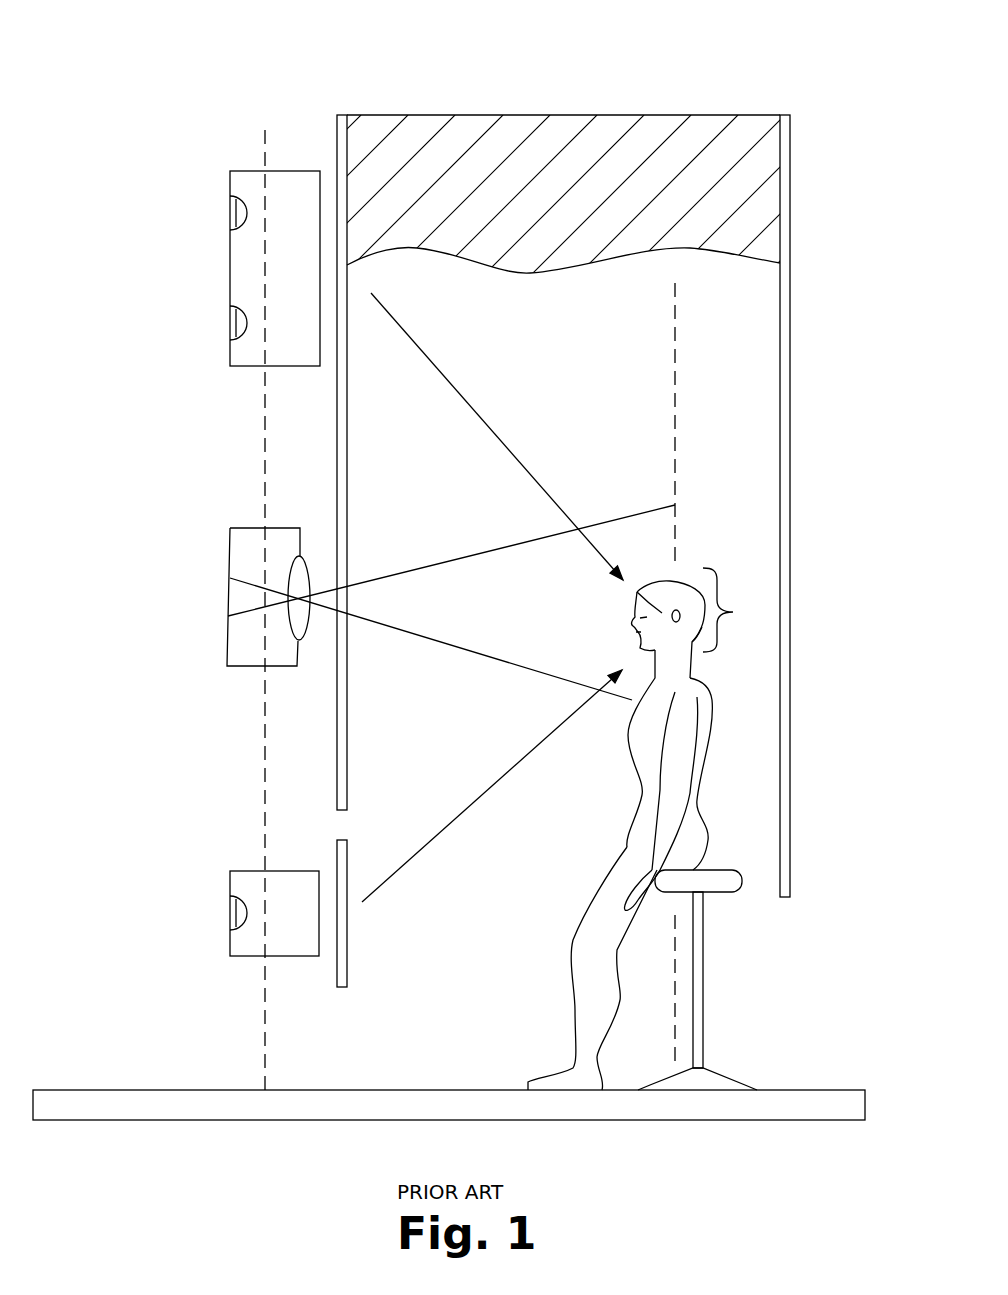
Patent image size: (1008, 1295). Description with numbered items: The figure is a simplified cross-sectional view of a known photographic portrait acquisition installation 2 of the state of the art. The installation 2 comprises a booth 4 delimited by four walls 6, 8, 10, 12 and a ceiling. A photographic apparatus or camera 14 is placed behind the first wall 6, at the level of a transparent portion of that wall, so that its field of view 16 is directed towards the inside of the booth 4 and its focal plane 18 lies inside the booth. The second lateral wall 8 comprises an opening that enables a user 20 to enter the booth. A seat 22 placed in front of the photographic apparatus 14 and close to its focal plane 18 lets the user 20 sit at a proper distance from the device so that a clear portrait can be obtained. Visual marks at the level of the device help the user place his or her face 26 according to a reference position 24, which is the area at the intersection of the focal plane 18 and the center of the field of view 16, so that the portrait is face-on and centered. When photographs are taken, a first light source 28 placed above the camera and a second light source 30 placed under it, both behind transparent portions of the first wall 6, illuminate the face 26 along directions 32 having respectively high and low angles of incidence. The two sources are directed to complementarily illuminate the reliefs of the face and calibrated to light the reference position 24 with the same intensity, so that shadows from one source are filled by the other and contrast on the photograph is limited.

The installation 2 is at (253, 48).
The booth 4 is at (595, 432).
The first wall 6 is at (342, 115).
The second lateral wall 8 is at (445, 158).
The wall 10 is at (549, 303).
The wall 12 is at (784, 114).
The photographic apparatus 14 is at (236, 631).
The field of view 16 is at (500, 600).
The focal plane 18 is at (675, 337).
The user 20 is at (692, 678).
The seat 22 is at (703, 1003).
The reference position 24 is at (734, 610).
The face 26 is at (606, 633).
The first light source 28 is at (242, 258).
The second light source 30 is at (247, 943).
The illumination directions 32 is at (450, 380).